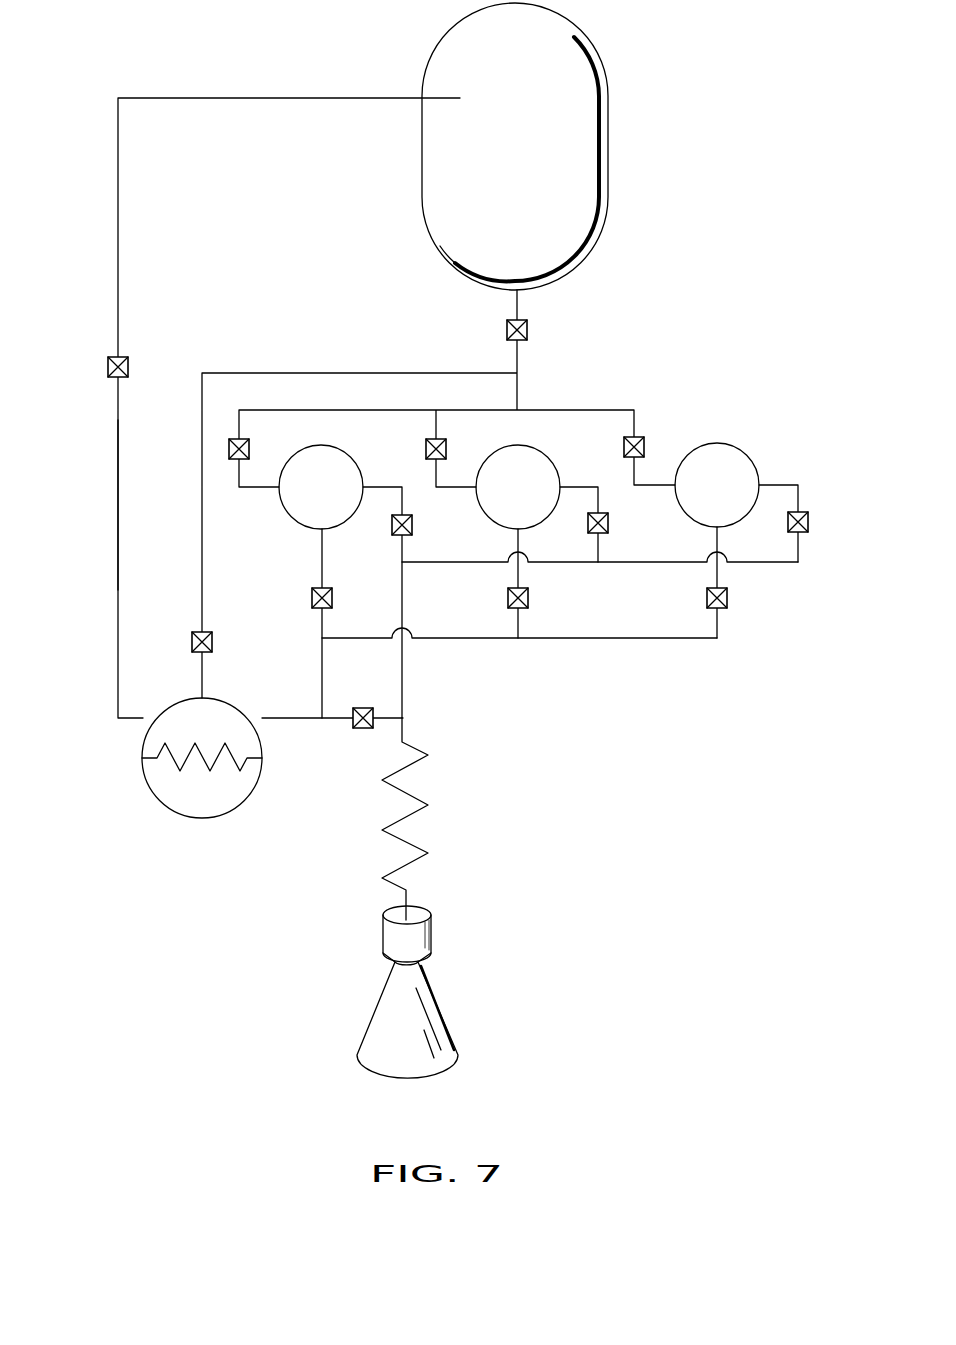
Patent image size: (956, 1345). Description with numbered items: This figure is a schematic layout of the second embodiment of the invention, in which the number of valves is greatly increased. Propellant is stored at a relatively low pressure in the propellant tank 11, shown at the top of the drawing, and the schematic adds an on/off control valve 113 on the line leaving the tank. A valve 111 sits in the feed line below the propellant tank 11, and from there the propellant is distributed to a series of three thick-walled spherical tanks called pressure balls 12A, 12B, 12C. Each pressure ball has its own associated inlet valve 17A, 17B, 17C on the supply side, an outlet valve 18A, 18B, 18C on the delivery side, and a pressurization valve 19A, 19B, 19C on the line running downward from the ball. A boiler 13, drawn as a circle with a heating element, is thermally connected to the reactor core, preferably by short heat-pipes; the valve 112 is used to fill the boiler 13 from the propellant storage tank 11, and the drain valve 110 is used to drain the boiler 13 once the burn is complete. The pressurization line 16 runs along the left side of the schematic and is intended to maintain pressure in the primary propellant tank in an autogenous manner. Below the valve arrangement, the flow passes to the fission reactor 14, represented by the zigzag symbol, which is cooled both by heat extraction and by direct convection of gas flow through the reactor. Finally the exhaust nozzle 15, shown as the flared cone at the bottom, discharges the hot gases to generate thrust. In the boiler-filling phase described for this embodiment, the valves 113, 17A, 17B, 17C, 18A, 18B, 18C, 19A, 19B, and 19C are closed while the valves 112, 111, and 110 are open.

The propellant tank 11 is at (630, 150).
The valve 111 is at (528, 332).
The on/off control valve 113 is at (108, 363).
The pressurization line 16 is at (118, 593).
The inlet valve 17A is at (250, 450).
The inlet valve 17B is at (447, 450).
The inlet valve 17C is at (645, 448).
The pressure ball 12A is at (352, 461).
The pressure ball 12B is at (551, 461).
The pressure ball 12C is at (748, 458).
The outlet valve 18A is at (413, 527).
The outlet valve 18B is at (609, 525).
The outlet valve 18C is at (809, 524).
The pressurization valve 19A is at (311, 598).
The pressurization valve 19B is at (529, 598).
The pressurization valve 19C is at (728, 598).
The valve 112 is at (212, 648).
The boiler 13 is at (144, 766).
The drain valve 110 is at (362, 727).
The fission reactor 14 is at (414, 843).
The exhaust nozzle 15 is at (398, 1013).